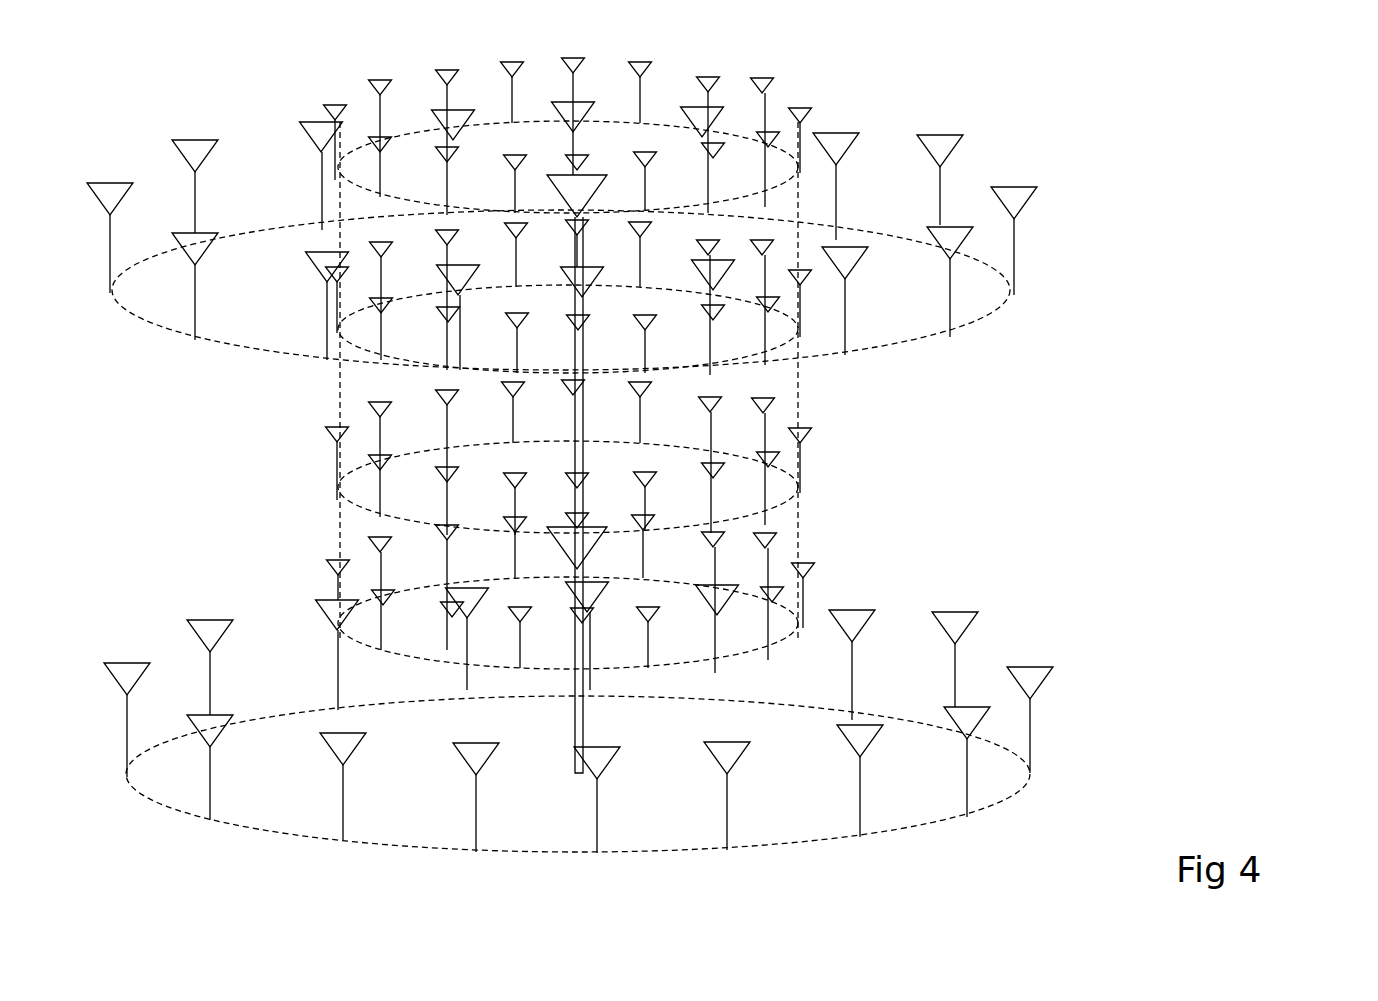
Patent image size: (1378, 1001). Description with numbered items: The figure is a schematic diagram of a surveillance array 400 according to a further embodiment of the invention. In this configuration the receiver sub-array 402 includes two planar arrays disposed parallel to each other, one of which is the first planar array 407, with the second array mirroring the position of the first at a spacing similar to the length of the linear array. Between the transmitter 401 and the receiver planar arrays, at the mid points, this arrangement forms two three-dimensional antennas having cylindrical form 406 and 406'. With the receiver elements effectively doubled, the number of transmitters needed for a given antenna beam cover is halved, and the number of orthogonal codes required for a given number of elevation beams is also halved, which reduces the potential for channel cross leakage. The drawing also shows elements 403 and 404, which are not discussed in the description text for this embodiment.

The surveillance array 400 is at (1165, 540).
The transmitter 401 is at (587, 697).
The receiver sub-array 402 is at (1030, 776).
The central antenna element 403 is at (562, 553).
The outer antenna elements 404 is at (183, 248).
The three-dimensional antenna having cylindrical form 406 is at (676, 395).
The three-dimensional antenna having cylindrical form 406' is at (669, 133).
The planar array 407 is at (998, 307).